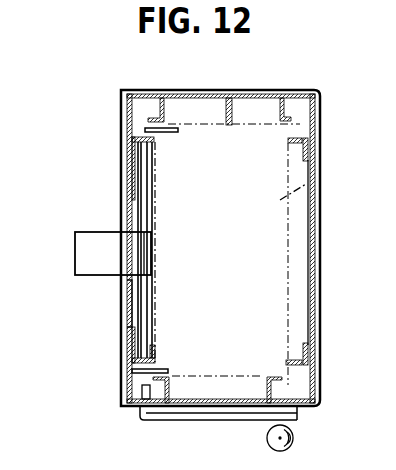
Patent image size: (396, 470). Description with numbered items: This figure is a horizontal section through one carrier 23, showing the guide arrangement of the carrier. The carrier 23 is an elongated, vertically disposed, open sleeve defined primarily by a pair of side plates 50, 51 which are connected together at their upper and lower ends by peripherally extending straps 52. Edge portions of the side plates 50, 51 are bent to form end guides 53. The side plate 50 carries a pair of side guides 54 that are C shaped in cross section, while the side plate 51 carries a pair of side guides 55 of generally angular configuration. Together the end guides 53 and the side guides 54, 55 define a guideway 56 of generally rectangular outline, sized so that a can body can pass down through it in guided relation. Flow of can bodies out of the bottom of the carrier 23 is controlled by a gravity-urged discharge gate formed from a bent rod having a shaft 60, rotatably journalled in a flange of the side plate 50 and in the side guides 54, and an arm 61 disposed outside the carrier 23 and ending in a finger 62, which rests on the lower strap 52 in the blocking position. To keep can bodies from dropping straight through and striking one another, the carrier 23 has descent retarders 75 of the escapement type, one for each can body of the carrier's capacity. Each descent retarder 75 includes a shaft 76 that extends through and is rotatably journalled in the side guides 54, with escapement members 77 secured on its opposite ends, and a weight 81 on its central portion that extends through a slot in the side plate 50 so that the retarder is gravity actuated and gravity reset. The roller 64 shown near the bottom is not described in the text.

The carrier 23 is at (258, 248).
The side plate 50 is at (127, 190).
The side plate 51 is at (318, 232).
The strap 52 is at (325, 330).
The end guide 53 is at (167, 108).
The side guide 54 is at (155, 145).
The side guide 55 is at (291, 144).
The guideway 56 is at (308, 184).
The shaft 60 is at (127, 385).
The arm 61 is at (196, 422).
The finger 62 is at (306, 420).
The roller 64 is at (298, 440).
The descent retarder 75 is at (114, 283).
The shaft 76 is at (146, 297).
The escapement member 77 is at (179, 130).
The weight 81 is at (88, 258).